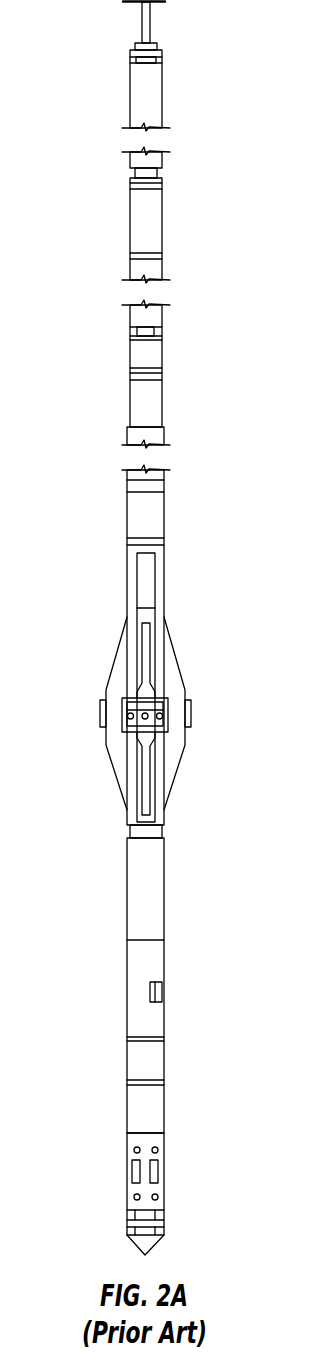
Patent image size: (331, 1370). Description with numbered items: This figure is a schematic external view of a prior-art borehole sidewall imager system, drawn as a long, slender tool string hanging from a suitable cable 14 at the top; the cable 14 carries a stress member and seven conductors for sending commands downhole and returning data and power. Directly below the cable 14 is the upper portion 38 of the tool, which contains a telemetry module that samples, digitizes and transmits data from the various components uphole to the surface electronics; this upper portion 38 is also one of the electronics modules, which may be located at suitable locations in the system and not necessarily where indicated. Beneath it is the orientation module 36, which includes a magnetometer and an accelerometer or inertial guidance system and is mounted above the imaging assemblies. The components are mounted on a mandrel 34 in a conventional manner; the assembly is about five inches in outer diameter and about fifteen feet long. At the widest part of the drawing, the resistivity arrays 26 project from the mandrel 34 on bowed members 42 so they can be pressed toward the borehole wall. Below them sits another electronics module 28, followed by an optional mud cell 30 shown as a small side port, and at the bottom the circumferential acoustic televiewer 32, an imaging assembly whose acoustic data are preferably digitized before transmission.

The cable 14 is at (151, 33).
The upper portion 38 is at (163, 82).
The orientation module 36 is at (163, 230).
The mandrel 34 is at (165, 518).
The bow springs 42 is at (118, 651).
The resistivity arrays 26 is at (101, 705).
The electronics module 28 is at (164, 885).
The mud cell 30 is at (163, 990).
The circumferential acoustic televiewer 32 is at (165, 1172).